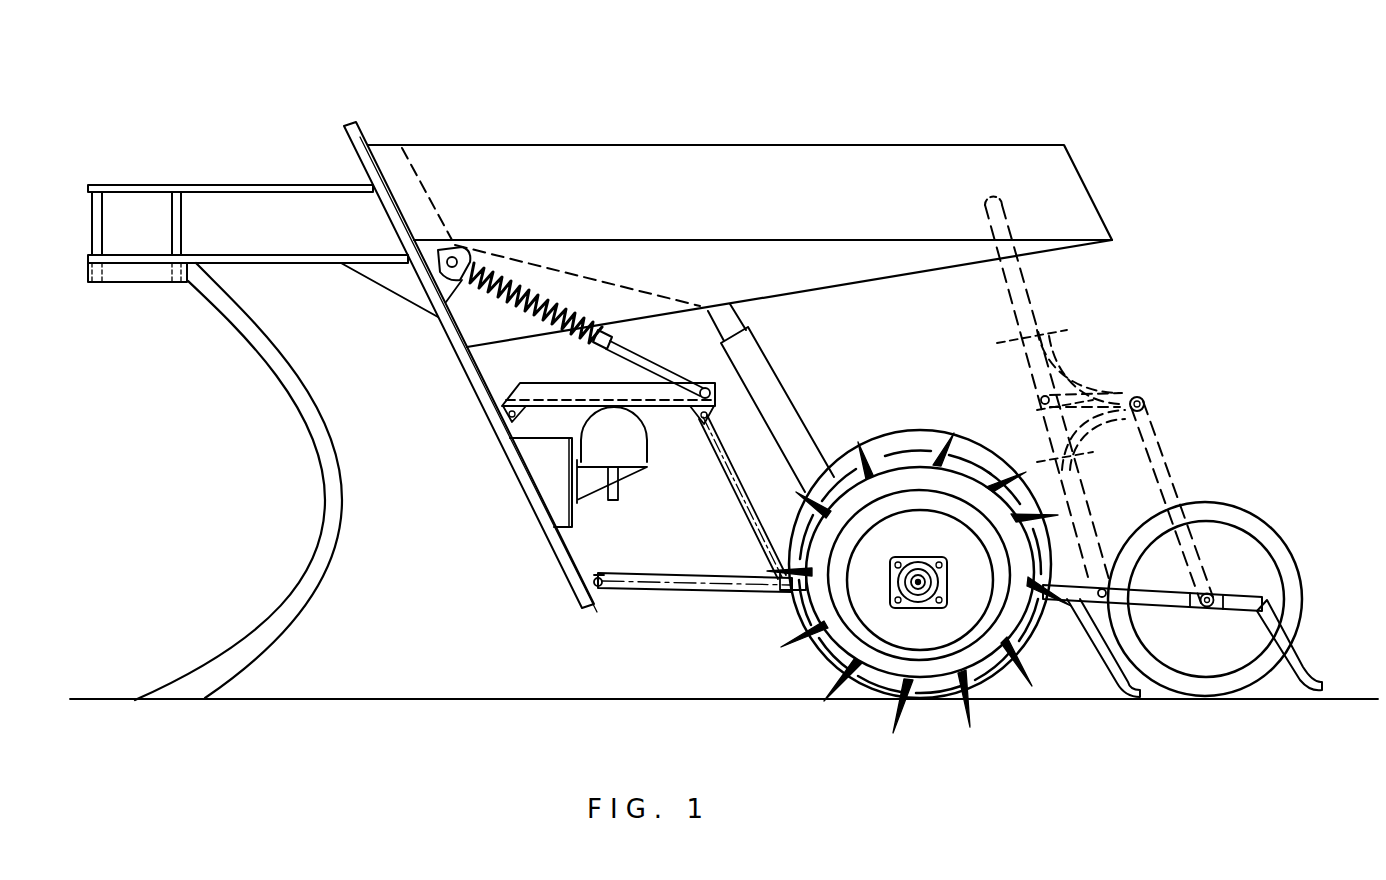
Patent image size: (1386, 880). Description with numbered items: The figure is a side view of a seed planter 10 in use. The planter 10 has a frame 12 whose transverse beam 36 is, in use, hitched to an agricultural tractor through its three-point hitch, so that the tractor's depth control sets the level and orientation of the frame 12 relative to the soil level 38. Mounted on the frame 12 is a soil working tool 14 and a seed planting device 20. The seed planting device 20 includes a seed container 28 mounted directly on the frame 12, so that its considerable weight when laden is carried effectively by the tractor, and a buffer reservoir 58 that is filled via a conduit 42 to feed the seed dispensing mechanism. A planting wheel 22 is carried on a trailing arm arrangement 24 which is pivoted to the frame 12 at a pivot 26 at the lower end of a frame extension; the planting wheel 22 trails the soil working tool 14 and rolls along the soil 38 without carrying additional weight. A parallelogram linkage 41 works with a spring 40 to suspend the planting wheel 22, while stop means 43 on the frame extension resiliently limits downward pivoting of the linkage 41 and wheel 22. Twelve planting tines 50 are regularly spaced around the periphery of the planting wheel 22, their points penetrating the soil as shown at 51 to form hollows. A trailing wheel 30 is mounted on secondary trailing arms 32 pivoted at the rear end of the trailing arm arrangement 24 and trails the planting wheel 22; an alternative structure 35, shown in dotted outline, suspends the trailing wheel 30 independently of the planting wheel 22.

The seed planter 10 is at (672, 80).
The frame 12 is at (300, 132).
The soil working tool 14 is at (297, 460).
The seed planting device 20 is at (1130, 270).
The planting wheel 22 is at (988, 427).
The trailing arm arrangement 24 is at (745, 587).
The pivot 26 is at (603, 592).
The seed container 28 is at (865, 120).
The trailing wheel 30 is at (1233, 504).
The secondary trailing arms 32 is at (1083, 583).
The alternative suspension structure 35 is at (1160, 427).
The transverse beam 36 is at (130, 217).
The soil level 38 is at (445, 703).
The spring 40 is at (580, 306).
The parallelogram linkage 41 is at (698, 445).
The conduit 42 is at (767, 383).
The stop means 43 is at (597, 506).
The planting tines 50 is at (1028, 668).
The tine points penetrating the soil 51 is at (832, 701).
The buffer reservoir 58 is at (763, 209).